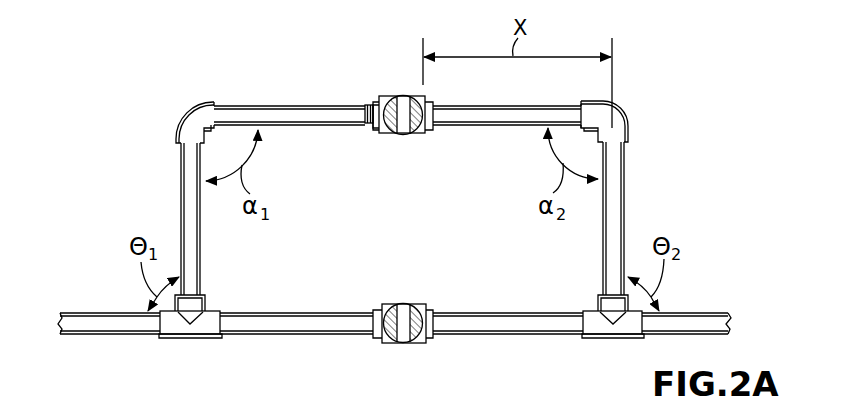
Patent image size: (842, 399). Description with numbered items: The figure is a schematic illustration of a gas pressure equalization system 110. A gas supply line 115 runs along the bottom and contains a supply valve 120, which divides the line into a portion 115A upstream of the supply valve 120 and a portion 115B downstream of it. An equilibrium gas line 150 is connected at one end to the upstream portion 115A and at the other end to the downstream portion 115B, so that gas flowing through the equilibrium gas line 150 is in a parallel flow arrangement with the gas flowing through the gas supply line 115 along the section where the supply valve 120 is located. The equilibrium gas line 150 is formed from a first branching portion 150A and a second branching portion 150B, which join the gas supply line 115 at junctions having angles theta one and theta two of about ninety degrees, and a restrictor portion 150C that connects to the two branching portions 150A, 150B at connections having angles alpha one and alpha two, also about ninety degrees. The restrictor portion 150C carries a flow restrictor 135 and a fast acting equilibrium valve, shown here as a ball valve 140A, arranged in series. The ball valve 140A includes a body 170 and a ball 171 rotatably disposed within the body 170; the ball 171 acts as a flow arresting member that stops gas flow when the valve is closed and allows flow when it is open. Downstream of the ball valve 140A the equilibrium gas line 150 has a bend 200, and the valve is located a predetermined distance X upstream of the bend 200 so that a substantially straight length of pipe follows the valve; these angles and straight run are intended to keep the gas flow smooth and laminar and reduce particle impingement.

The gas pressure equalization system 110 is at (152, 142).
The gas supply line 115 is at (684, 313).
The portion of the gas supply line upstream from the supply valve 115A is at (270, 335).
The portion of the gas supply line downstream of the supply valve 115B is at (548, 337).
The supply valve 120 is at (415, 343).
The flow restrictor 135 is at (366, 112).
The ball valve 140A is at (392, 98).
The equilibrium gas line 150 is at (643, 115).
The first branching portion 150A is at (180, 201).
The second branching portion 150B is at (624, 183).
The restrictor portion 150C is at (238, 103).
The body 170 is at (394, 134).
The ball 171 is at (383, 130).
The bend 200 is at (627, 105).